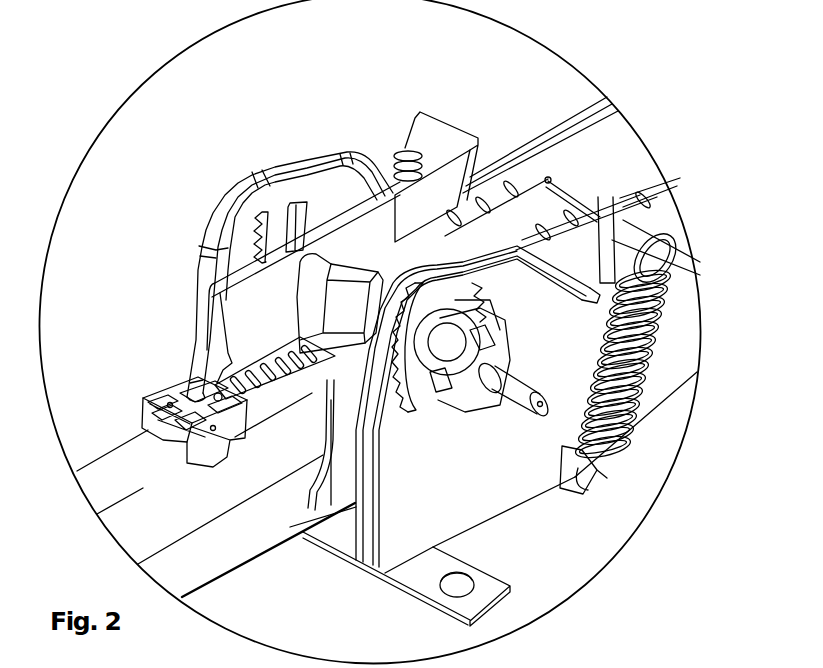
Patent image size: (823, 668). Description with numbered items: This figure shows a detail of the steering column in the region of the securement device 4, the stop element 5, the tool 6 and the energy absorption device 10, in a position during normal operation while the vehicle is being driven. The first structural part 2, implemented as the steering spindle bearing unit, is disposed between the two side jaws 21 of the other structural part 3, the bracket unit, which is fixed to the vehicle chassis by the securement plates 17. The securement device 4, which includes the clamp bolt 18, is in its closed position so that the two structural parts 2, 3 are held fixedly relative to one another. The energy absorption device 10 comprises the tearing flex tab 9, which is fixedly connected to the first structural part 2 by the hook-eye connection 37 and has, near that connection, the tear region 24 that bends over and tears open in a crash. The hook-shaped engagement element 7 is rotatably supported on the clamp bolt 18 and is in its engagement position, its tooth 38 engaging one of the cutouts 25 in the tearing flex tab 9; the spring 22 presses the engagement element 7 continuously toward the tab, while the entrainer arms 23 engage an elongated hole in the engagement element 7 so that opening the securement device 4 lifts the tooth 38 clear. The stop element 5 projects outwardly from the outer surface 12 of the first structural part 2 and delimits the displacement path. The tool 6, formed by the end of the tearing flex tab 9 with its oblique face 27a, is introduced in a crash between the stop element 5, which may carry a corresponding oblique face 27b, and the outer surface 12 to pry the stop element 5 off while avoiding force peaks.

The first structural part 2 is at (190, 572).
The other structural part 3 is at (452, 516).
The securement device 4 is at (490, 316).
The stop element 5 is at (172, 396).
The tool 6 is at (202, 333).
The hook-shaped engagement element 7 is at (334, 330).
The tearing flex tab 9 is at (263, 397).
The energy absorption device 10 is at (558, 200).
The outer surface 12 is at (112, 465).
The securement plates 17 is at (472, 600).
The clamp bolt 18 is at (514, 394).
The side jaws 21 is at (376, 401).
The spring 22 is at (352, 275).
The entrainer arms 23 is at (609, 449).
The tear region 24 is at (527, 233).
The cutouts 25 is at (297, 395).
The oblique face 27a is at (260, 398).
The oblique face 27b is at (262, 365).
The hook-eye connection 37 is at (672, 197).
The tooth 38 is at (328, 420).